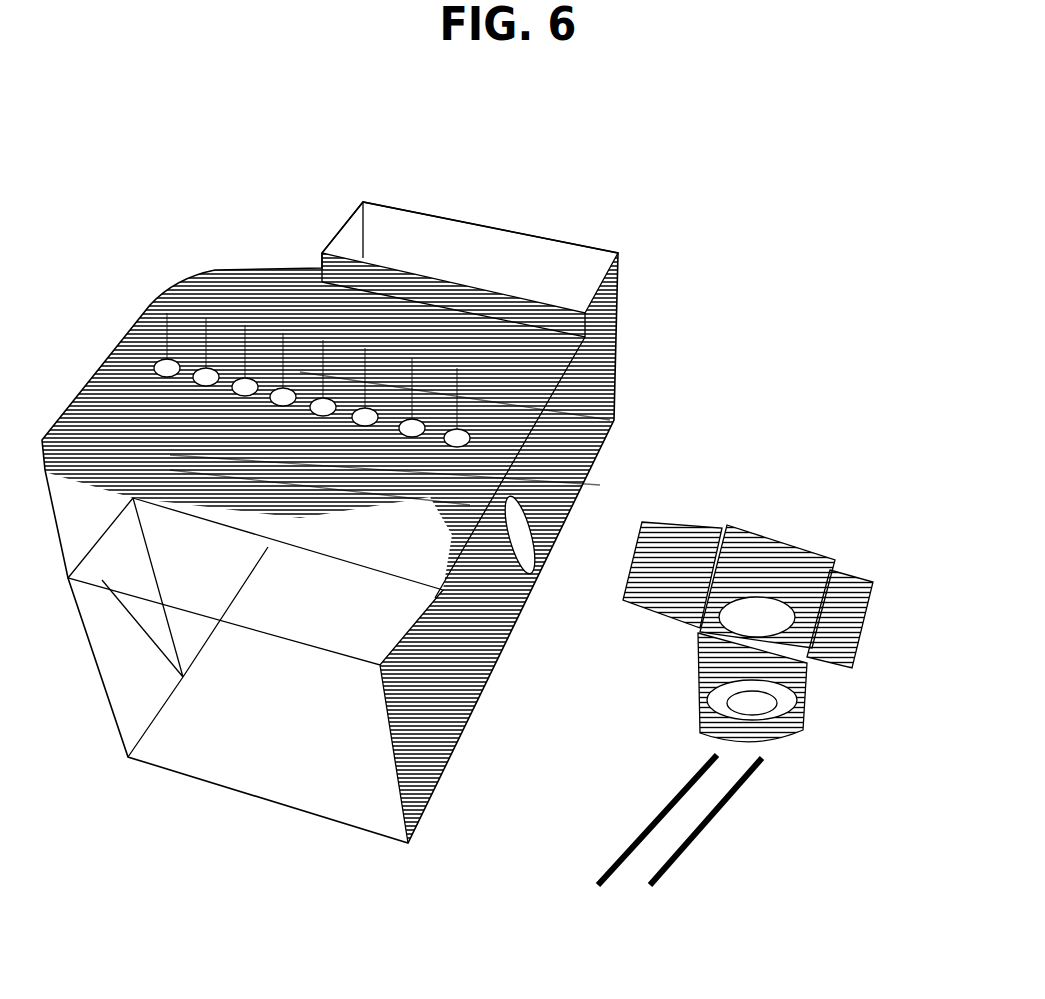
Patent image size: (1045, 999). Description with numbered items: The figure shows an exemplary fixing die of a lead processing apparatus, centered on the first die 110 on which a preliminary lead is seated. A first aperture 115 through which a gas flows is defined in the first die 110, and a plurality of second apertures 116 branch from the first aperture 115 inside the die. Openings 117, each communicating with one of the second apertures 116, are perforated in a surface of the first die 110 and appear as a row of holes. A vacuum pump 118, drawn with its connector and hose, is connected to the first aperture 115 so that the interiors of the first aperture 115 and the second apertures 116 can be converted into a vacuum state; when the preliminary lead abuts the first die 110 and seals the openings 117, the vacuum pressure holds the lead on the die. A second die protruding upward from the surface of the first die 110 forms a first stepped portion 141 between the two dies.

The first die 110 is at (137, 298).
The first stepped portion 141 is at (330, 280).
The openings 117 is at (466, 430).
The second apertures 116 is at (463, 463).
The first aperture 115 is at (530, 517).
The vacuum pump 118 is at (855, 645).